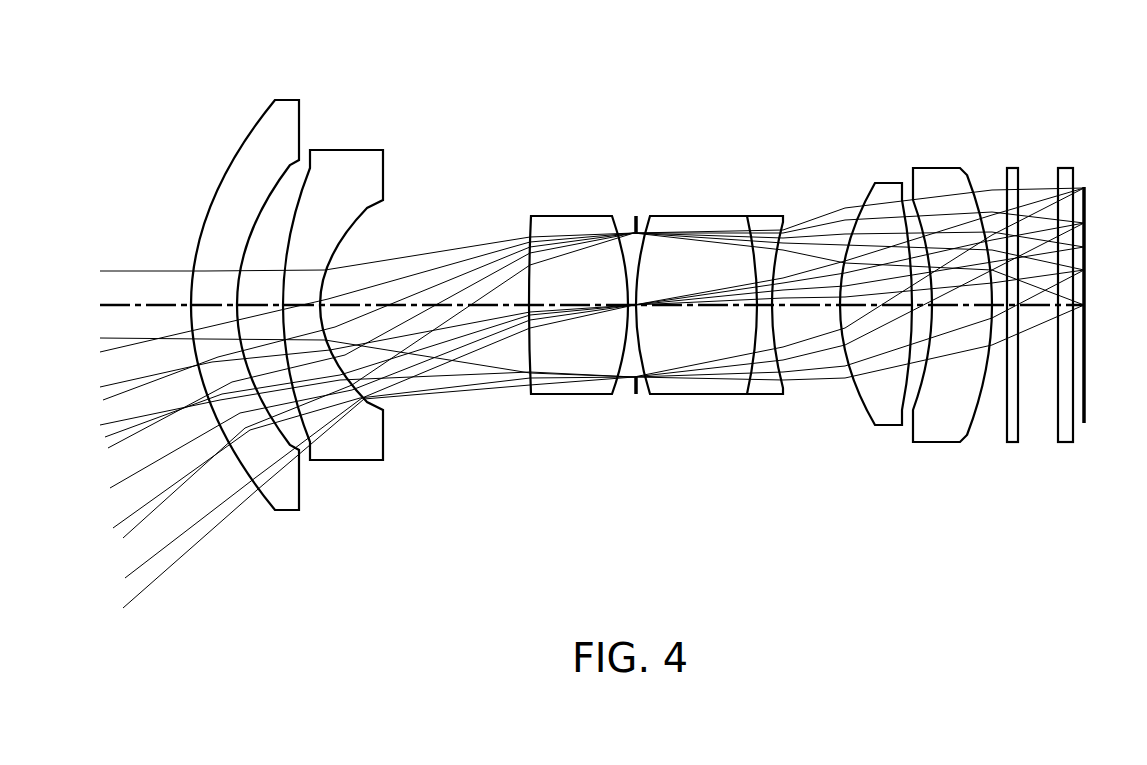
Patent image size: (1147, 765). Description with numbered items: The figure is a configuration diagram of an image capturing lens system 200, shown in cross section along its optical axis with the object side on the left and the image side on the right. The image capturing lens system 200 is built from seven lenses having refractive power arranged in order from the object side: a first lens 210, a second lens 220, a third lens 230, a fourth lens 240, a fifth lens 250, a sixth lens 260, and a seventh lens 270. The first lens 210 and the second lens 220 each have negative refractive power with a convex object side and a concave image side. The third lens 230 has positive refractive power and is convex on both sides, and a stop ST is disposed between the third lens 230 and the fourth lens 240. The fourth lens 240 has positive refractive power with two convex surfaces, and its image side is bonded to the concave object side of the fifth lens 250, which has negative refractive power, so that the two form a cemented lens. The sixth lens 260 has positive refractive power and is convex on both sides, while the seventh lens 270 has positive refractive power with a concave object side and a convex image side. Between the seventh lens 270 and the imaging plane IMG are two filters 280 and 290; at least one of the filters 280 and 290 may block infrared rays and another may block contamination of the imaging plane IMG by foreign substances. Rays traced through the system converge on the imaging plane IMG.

The image capturing lens system 200 is at (708, 129).
The first lens 210 is at (287, 512).
The second lens 220 is at (345, 462).
The third lens 230 is at (572, 398).
The fourth lens 240 is at (677, 398).
The fifth lens 250 is at (763, 398).
The sixth lens 260 is at (887, 427).
The seventh lens 270 is at (937, 444).
The filter 280 is at (1012, 444).
The filter 290 is at (1062, 444).
The stop ST is at (636, 216).
The imaging plane IMG is at (1086, 187).